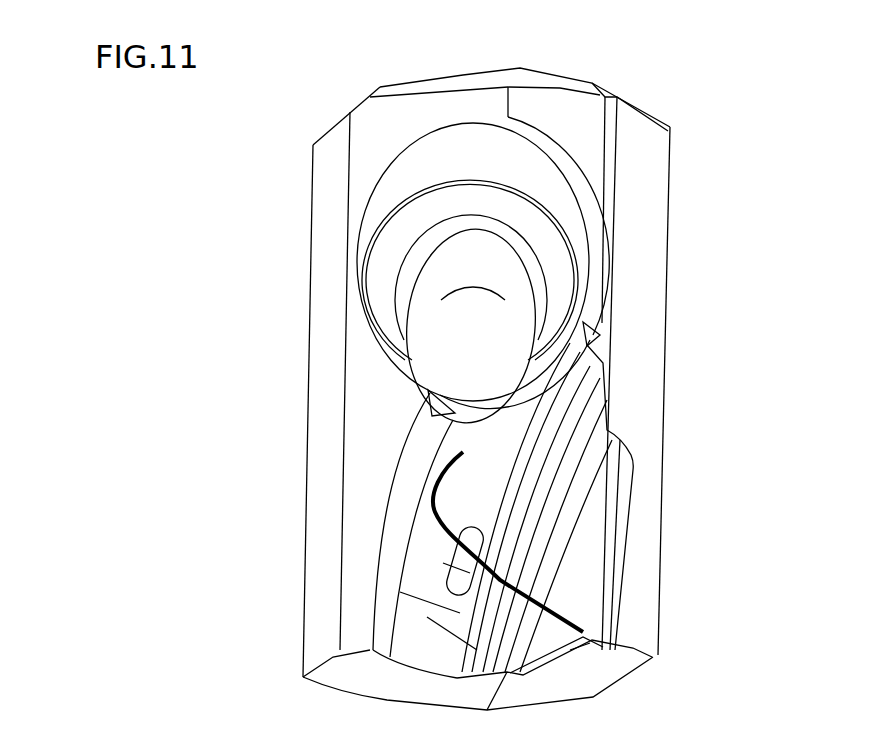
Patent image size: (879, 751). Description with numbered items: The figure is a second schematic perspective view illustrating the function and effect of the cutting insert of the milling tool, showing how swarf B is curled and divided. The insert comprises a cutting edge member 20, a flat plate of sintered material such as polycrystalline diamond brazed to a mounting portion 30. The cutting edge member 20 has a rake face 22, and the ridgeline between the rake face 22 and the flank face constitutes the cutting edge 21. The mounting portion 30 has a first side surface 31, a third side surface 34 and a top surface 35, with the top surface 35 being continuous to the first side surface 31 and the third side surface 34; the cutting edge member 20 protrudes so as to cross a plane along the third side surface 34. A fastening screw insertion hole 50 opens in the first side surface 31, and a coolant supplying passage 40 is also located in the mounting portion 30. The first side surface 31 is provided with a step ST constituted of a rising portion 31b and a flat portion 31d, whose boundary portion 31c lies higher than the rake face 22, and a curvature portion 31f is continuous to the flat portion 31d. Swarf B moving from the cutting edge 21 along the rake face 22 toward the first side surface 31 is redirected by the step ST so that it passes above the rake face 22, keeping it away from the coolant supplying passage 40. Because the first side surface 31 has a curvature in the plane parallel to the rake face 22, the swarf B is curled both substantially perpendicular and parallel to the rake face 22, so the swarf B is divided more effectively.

The fastening screw insertion hole 50 is at (467, 203).
The mounting portion 30 is at (170, 482).
The top surface 35 is at (368, 458).
The first side surface 31 is at (204, 558).
The step ST is at (245, 530).
The rising portion 31b is at (443, 563).
The boundary portion 31c is at (400, 592).
The flat portion 31d is at (427, 617).
The curvature portion 31f is at (423, 633).
The third side surface 34 is at (358, 678).
The cutting edge member 20 is at (710, 558).
The cutting edge 21 is at (598, 605).
The rake face 22 is at (565, 568).
The swarf B is at (437, 507).
The coolant supplying passage 40 is at (485, 550).